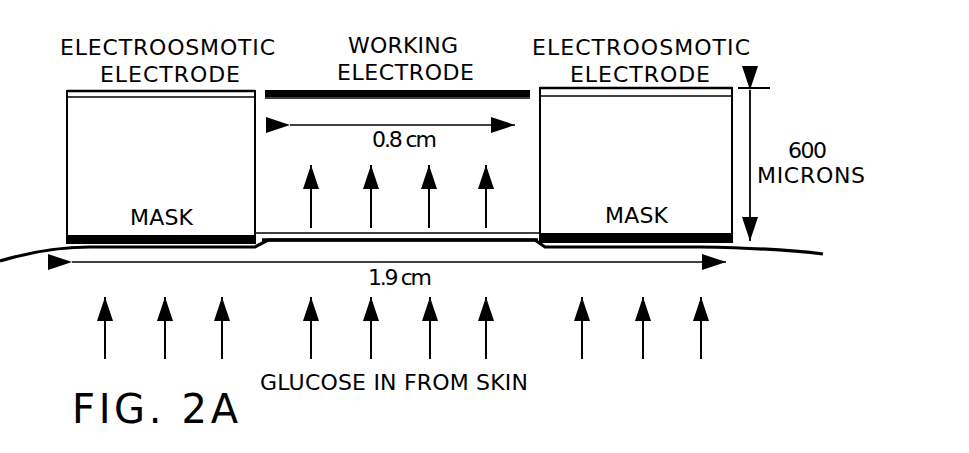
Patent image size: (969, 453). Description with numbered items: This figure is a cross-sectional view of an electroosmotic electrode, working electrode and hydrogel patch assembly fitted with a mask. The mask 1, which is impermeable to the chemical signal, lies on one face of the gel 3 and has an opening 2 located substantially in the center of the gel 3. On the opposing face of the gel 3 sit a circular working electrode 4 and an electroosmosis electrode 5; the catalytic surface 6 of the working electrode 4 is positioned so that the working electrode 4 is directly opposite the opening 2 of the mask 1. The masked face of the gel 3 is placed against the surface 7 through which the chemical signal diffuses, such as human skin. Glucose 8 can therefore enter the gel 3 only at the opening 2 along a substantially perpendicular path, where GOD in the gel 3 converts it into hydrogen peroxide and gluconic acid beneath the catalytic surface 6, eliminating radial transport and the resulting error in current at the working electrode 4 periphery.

The mask 1 is at (727, 243).
The opening 2 is at (503, 243).
The gel 3 is at (717, 190).
The working electrode 4 is at (483, 88).
The electroosmosis electrode 5 is at (245, 90).
The catalytic surface 6 is at (513, 97).
The surface 7 is at (787, 272).
The glucose 8 is at (702, 338).